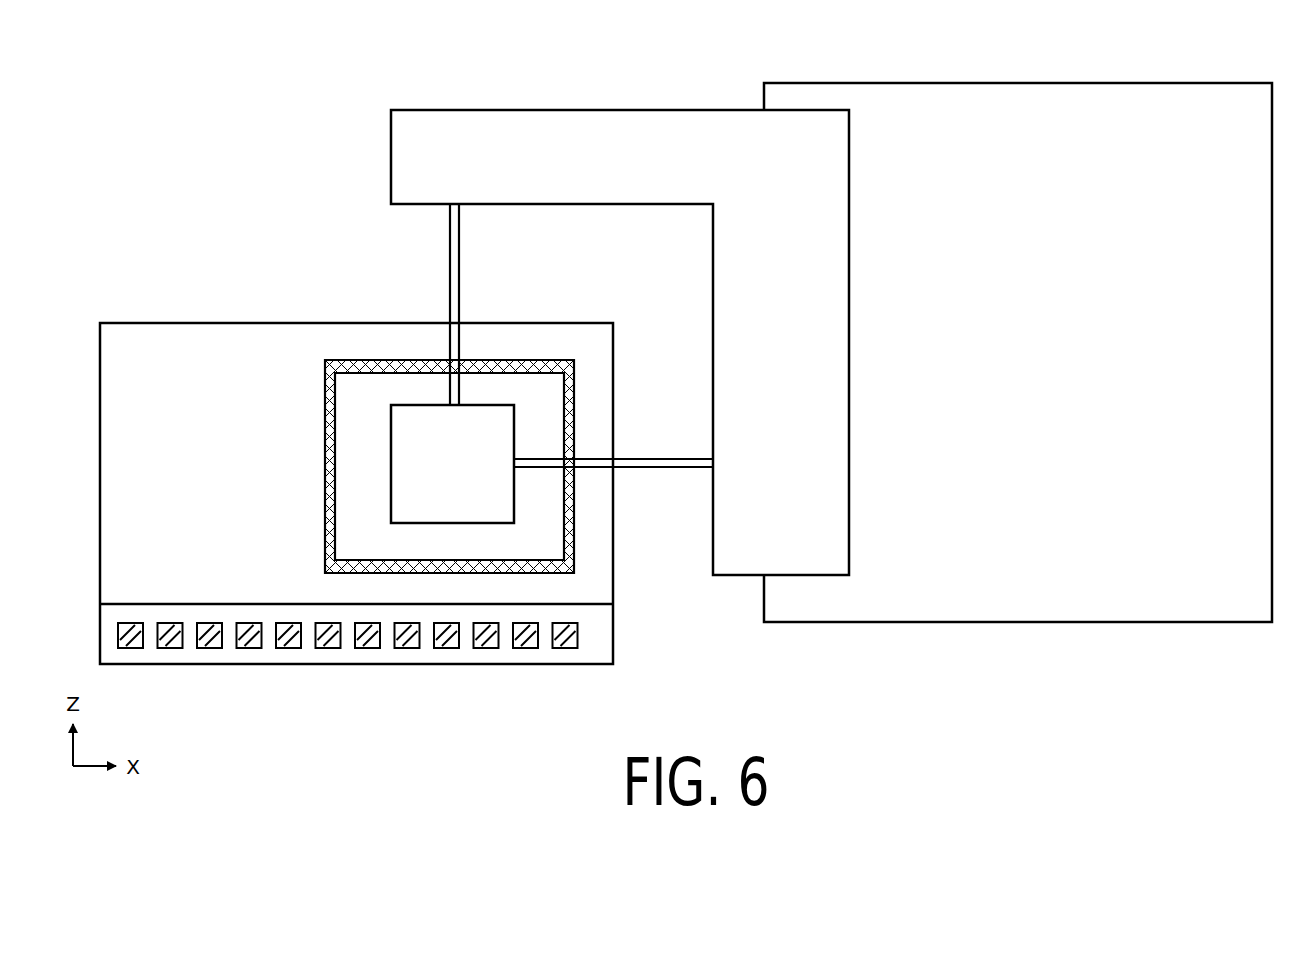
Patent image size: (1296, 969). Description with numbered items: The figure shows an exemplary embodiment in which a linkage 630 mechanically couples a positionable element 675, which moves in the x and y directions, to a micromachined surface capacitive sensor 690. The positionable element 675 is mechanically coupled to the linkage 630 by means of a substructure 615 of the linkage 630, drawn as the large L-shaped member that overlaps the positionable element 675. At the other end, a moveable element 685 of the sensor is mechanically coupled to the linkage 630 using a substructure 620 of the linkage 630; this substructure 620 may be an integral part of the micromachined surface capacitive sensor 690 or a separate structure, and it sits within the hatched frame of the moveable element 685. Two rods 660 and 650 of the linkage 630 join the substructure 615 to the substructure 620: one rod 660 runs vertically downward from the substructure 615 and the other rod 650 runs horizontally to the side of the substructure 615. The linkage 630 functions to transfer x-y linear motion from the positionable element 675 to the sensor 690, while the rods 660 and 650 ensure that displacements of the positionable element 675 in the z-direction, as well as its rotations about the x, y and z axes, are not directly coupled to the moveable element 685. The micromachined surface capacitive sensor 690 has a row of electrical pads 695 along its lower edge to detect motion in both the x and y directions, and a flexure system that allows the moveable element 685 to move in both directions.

The linkage 630 is at (488, 64).
The substructure 615 is at (655, 145).
The positionable element 675 is at (1031, 112).
The micromachined surface capacitive sensor 690 is at (209, 357).
The substructure 620 is at (420, 435).
The rod 660 is at (460, 260).
The rod 650 is at (660, 455).
The moveable element 685 is at (538, 513).
The electrical pads 695 is at (445, 648).